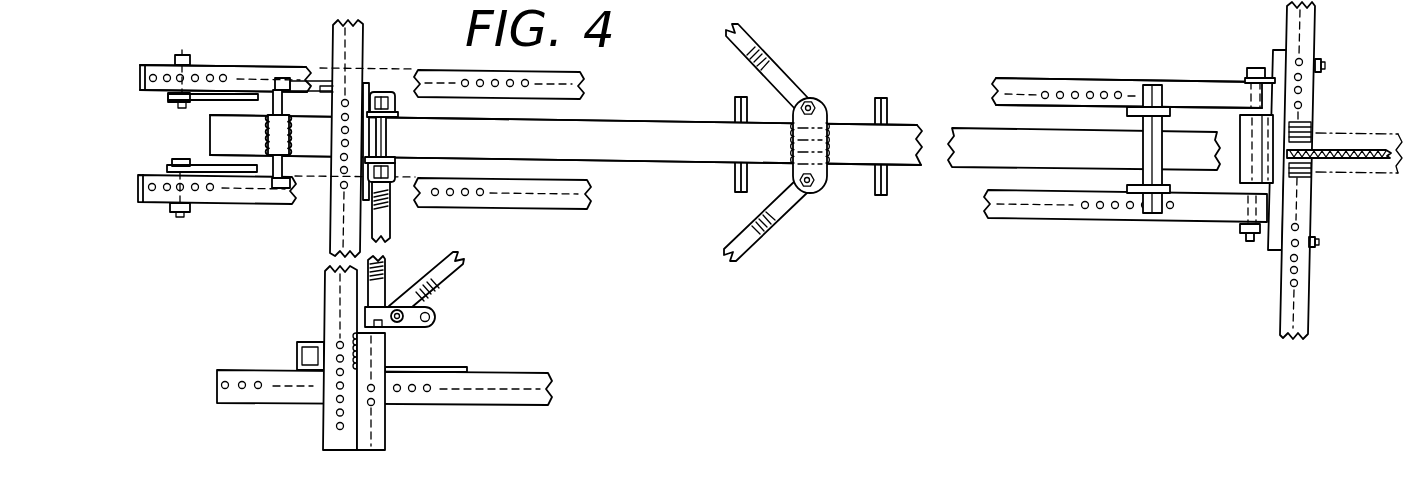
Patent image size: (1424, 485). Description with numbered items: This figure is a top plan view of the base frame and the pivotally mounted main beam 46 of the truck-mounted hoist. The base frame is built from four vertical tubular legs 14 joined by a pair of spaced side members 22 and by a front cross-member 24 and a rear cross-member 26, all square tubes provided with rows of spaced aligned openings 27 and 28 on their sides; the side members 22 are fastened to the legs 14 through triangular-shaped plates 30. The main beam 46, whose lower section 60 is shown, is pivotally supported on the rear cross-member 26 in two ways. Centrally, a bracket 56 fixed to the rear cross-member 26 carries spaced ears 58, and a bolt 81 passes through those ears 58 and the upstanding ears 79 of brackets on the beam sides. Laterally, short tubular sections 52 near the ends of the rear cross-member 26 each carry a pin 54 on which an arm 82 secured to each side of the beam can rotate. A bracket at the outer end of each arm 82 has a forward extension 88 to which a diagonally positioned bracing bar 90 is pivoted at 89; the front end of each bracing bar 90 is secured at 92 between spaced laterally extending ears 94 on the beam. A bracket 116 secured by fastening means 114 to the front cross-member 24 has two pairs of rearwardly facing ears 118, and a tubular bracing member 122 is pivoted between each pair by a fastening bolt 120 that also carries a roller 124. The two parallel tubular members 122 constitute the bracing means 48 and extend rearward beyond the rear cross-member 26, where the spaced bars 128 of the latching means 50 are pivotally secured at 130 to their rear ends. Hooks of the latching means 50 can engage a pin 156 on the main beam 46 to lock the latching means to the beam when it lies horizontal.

The vertically extending tubular legs 14 is at (300, 342).
The side members 22 is at (487, 408).
The front cross-member 24 is at (1316, 18).
The rear cross-member 26 is at (363, 30).
The spaced alined openings 27 is at (1300, 283).
The spaced alined openings 28 is at (338, 187).
The triangular-shaped plates 30 is at (453, 368).
The main beam 46 is at (639, 119).
The bracing means 48 is at (252, 60).
The latching means 50 is at (200, 107).
The short tubular sections 52 is at (385, 425).
The pin 54 is at (381, 322).
The bracket 56 is at (370, 83).
The spaced ears 58 is at (397, 107).
The lower section 60 is at (657, 150).
The upstanding ear 79 is at (398, 113).
The bolt 81 is at (387, 127).
The arm 82 is at (390, 228).
The forward extension 88 is at (435, 317).
The pivotal securement 89 is at (397, 324).
The diagonally positioned bracing bar 90 is at (462, 266).
The securement of bracing bar front end 92 is at (814, 103).
The spaced laterally extending ears 94 is at (827, 118).
The fastening means 114 is at (1326, 63).
The bracket 116 is at (1239, 74).
The rearwardly facing spaced ears 118 is at (1262, 68).
The fastening bolt 120 is at (1252, 242).
The tubular bracing member 122 is at (155, 65).
The roller 124 is at (1272, 123).
The spaced bars 128 is at (227, 98).
The pivotal securement 130 is at (182, 52).
The pin 156 is at (290, 85).